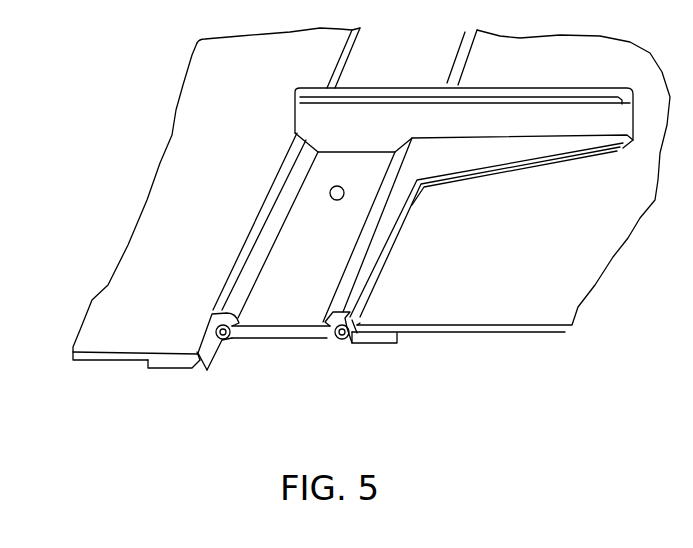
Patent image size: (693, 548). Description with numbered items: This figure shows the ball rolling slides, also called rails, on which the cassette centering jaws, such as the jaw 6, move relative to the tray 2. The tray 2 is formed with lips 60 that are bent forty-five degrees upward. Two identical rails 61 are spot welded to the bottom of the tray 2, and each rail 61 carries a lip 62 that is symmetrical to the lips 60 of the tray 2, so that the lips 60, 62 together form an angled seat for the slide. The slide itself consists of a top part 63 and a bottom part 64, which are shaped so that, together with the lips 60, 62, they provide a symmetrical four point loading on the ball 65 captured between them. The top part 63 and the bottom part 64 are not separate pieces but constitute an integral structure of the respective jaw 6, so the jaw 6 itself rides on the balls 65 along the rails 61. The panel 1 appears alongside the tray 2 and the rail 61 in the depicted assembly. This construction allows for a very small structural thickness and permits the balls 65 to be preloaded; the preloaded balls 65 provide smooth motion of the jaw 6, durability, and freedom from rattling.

The first panel 1 is at (558, 280).
The tray 2 is at (147, 197).
The jaw 6 is at (371, 258).
The lips 60 is at (197, 352).
The rails 61 is at (167, 365).
The lip 62 is at (203, 370).
The top part 63 is at (387, 219).
The bottom part 64 is at (280, 333).
The ball 65 is at (342, 342).